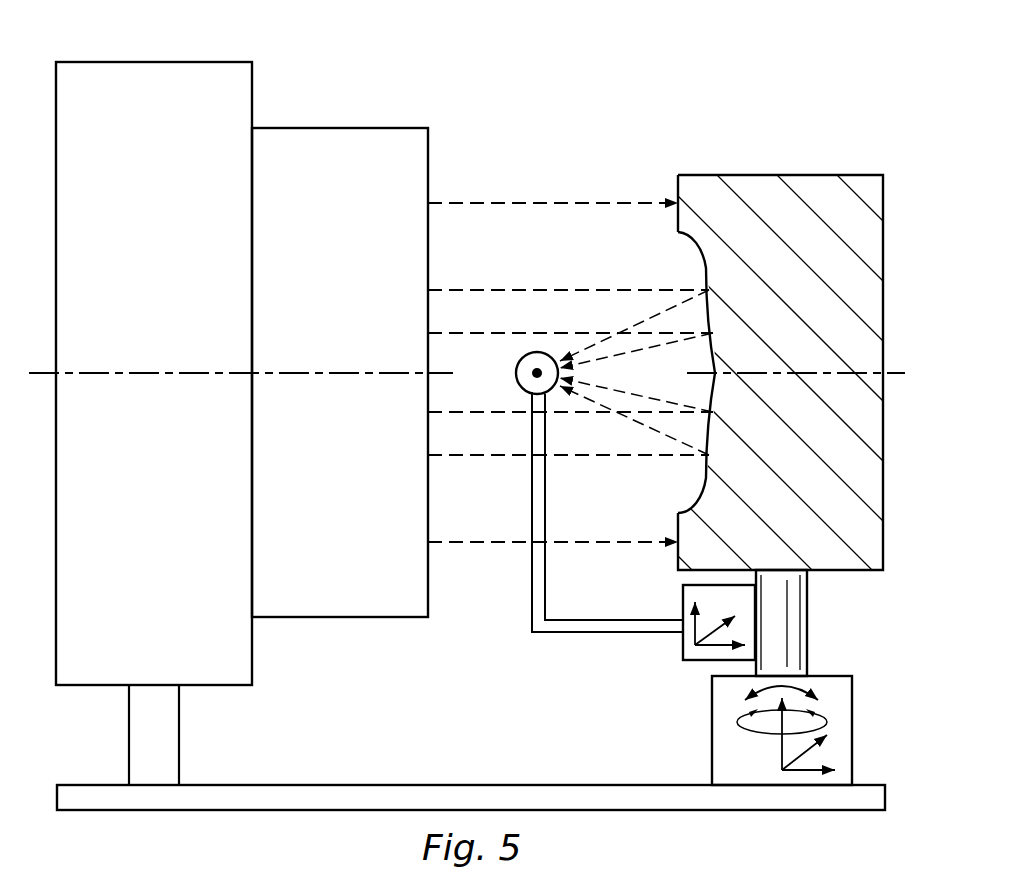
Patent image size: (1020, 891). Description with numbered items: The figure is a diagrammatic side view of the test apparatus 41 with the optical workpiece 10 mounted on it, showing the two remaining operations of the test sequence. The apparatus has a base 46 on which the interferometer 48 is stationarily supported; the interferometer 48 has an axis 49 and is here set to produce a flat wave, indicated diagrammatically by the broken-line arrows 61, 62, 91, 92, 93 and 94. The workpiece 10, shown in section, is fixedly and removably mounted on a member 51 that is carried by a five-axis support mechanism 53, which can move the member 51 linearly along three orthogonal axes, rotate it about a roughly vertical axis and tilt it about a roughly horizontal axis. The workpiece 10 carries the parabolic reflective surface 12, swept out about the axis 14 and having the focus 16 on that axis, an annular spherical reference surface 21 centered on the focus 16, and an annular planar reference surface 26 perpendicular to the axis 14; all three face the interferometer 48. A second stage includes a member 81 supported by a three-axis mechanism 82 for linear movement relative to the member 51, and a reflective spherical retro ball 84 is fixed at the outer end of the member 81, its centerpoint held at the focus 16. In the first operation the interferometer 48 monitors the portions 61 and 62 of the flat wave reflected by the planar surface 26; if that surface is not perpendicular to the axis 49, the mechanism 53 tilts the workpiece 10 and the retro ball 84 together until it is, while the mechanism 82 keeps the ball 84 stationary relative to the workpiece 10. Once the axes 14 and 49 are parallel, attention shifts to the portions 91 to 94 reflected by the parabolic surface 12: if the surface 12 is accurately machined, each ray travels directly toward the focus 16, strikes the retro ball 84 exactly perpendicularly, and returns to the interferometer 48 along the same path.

The optical workpiece 10 is at (571, 445).
The reflective optical surface 12 is at (709, 435).
The axis 14 is at (900, 375).
The focus 16 is at (531, 375).
The reflective optical surface 21 is at (696, 255).
The reflective optical surface 26 is at (678, 183).
The test apparatus 41 is at (526, 103).
The base 46 is at (389, 785).
The interferometer 48 is at (150, 62).
The axis 49 is at (157, 372).
The member 51 is at (808, 624).
The 5-axis support mechanism 53 is at (853, 728).
The broken-line arrow 61 is at (556, 202).
The broken-line arrow 62 is at (596, 542).
The member 81 is at (547, 501).
The 3-axis support mechanism 82 is at (703, 663).
The reflective spherical ball 84 is at (517, 366).
The broken-line arrow 91 is at (556, 289).
The broken-line arrow 92 is at (453, 333).
The broken-line arrow 93 is at (453, 412).
The broken-line arrow 94 is at (478, 456).